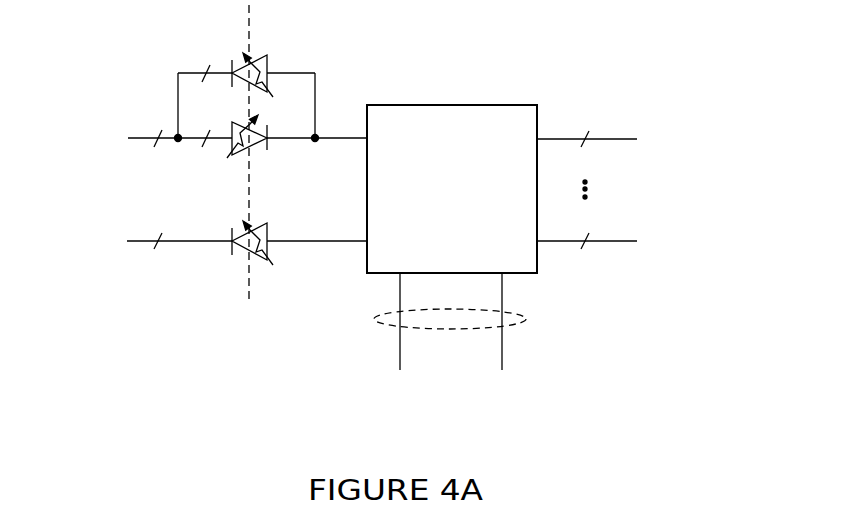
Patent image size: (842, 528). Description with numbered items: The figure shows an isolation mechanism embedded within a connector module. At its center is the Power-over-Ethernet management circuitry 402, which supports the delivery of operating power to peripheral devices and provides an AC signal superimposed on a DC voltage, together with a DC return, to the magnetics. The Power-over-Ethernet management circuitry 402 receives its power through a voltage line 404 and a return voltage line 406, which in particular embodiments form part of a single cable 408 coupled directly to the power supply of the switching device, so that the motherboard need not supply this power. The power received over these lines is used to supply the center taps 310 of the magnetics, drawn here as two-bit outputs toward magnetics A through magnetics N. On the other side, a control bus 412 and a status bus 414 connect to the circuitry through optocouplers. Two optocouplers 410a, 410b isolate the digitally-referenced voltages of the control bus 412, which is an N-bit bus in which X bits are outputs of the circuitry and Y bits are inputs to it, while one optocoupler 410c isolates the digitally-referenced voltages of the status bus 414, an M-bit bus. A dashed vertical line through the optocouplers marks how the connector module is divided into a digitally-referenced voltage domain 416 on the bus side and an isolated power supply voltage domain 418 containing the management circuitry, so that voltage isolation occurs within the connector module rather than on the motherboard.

The center taps 310 is at (715, 98).
The Power-over-Ethernet management circuitry 402 is at (454, 99).
The voltage line 404 is at (386, 411).
The return voltage line 406 is at (512, 438).
The single cable 408 is at (525, 312).
The optocoupler 410a is at (271, 38).
The optocoupler 410b is at (263, 167).
The optocoupler 410c is at (258, 272).
The control bus 412 is at (41, 108).
The status bus 414 is at (40, 213).
The digitally-referenced voltage domain 416 is at (173, 351).
The isolated power supply voltage domain 418 is at (311, 351).